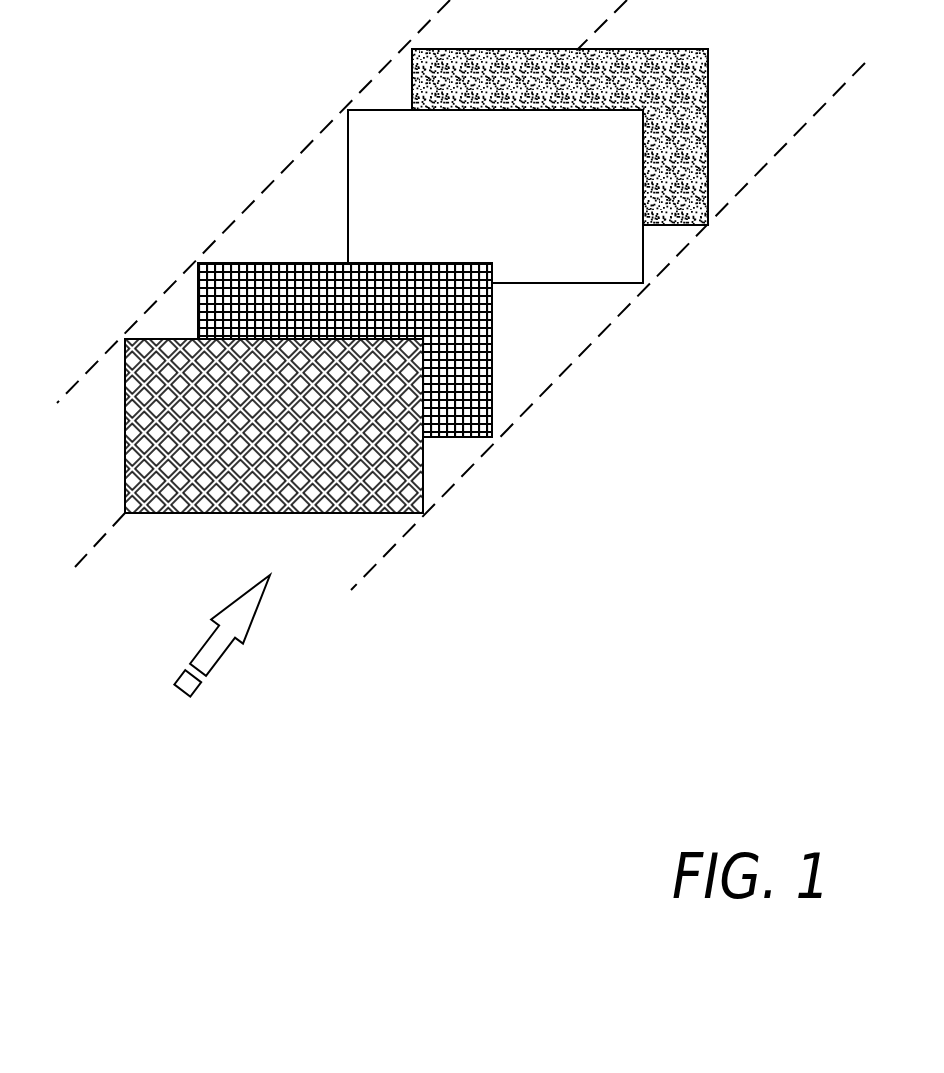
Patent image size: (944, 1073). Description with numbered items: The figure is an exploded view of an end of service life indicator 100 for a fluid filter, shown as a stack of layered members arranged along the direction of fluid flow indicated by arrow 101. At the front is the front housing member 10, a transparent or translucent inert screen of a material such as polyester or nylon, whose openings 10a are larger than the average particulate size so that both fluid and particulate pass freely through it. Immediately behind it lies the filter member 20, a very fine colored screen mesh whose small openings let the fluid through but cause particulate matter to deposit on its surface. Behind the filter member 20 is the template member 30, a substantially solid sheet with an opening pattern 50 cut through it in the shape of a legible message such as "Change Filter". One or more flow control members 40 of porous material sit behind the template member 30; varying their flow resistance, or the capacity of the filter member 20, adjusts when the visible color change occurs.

The end of service life indicator 100 is at (336, 58).
The front housing member 10 is at (390, 491).
The openings 10a is at (153, 500).
The filter member 20 is at (457, 418).
The template member 30 is at (487, 217).
The flow control member 40 is at (678, 202).
The opening pattern 50 is at (347, 152).
The arrow 101 is at (226, 690).